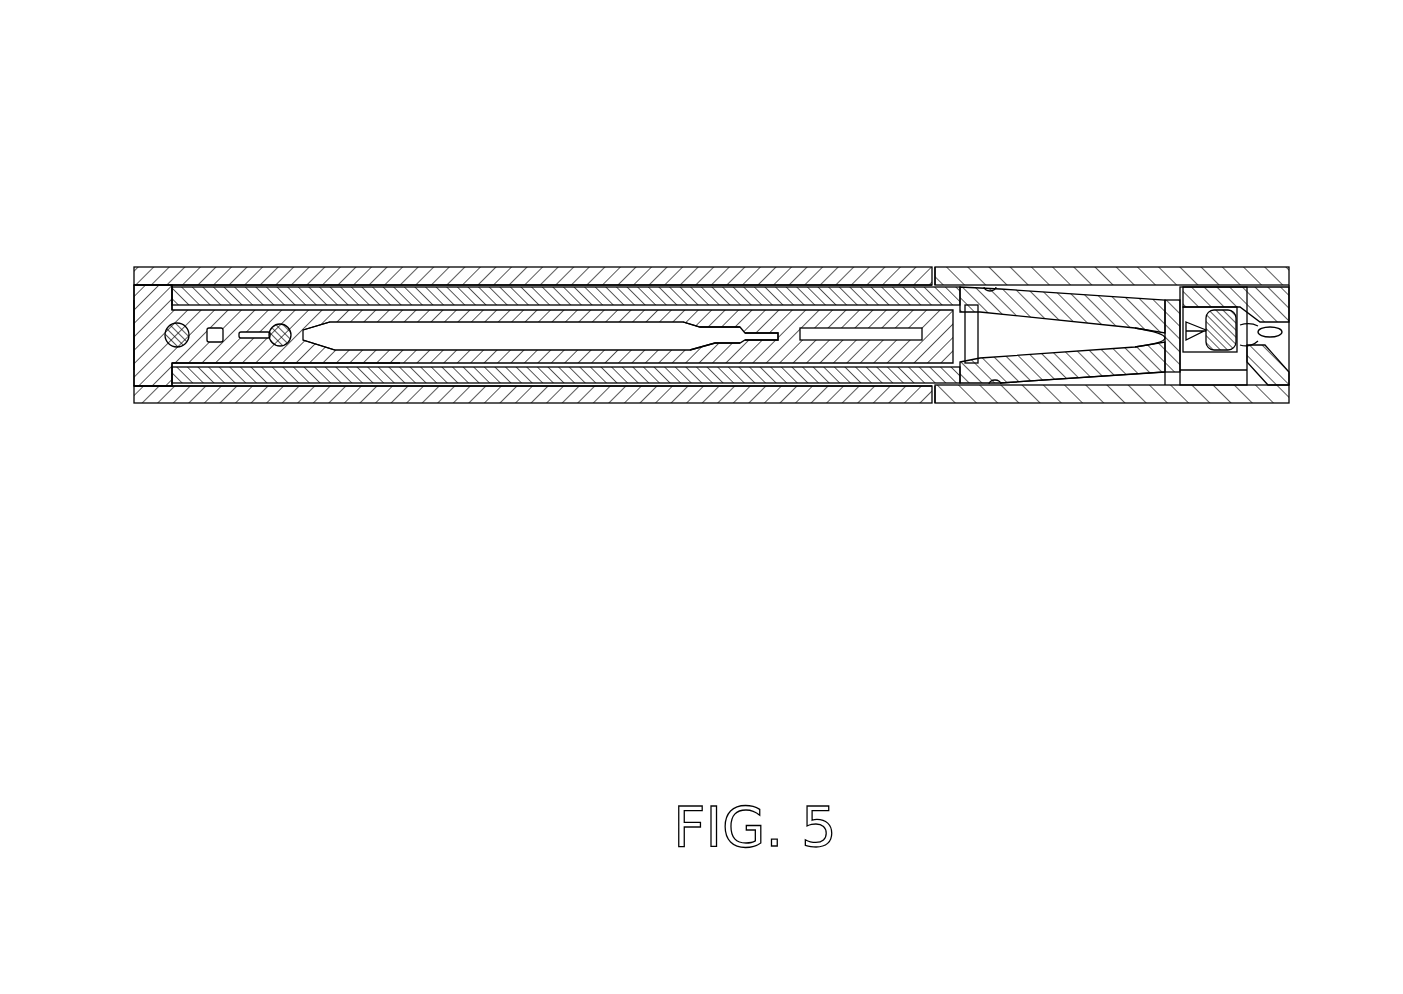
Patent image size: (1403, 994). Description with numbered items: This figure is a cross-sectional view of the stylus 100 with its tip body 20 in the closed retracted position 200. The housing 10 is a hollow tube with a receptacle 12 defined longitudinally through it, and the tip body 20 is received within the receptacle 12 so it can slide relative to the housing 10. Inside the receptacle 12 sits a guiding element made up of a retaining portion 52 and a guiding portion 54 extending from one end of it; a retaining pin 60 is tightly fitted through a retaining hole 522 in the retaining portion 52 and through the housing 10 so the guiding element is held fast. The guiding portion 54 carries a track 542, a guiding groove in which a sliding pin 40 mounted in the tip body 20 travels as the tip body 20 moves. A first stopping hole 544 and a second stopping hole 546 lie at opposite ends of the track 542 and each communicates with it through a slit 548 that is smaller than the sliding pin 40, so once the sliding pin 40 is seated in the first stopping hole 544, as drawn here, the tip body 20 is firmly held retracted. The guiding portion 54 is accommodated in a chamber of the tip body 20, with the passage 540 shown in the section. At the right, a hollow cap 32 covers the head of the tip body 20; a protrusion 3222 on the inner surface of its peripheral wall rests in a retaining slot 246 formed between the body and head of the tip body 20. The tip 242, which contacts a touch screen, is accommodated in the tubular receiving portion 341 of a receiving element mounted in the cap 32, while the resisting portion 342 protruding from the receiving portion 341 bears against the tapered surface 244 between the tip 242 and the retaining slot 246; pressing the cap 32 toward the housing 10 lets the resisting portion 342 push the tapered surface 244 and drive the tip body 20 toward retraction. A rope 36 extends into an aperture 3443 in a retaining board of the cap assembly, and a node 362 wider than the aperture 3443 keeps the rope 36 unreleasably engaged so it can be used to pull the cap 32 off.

The retracted position 200 is at (830, 55).
The stylus 100 is at (526, 192).
The housing 10 is at (568, 284).
The receptacle 12 is at (665, 300).
The tip body 20 is at (442, 300).
The cap 32 is at (990, 287).
The protrusion 3222 is at (997, 382).
The rope 36 is at (1292, 331).
The aperture 3443 is at (1278, 302).
The node 362 is at (1246, 403).
The receiving portion 341 is at (1170, 310).
The resisting portion 342 is at (1101, 378).
The tip 242 is at (1125, 318).
The tapered surface 244 is at (1160, 380).
The retaining slot 246 is at (965, 392).
The sliding pin 40 is at (285, 323).
The retaining pin 60 is at (170, 331).
The retaining portion 52 is at (205, 386).
The retaining hole 522 is at (165, 348).
The guiding portion 54 is at (370, 362).
The narrowed passage 540 is at (715, 335).
The track 542 is at (455, 335).
The first stopping hole 544 is at (267, 352).
The second stopping hole 546 is at (747, 340).
The slit 548 is at (300, 338).